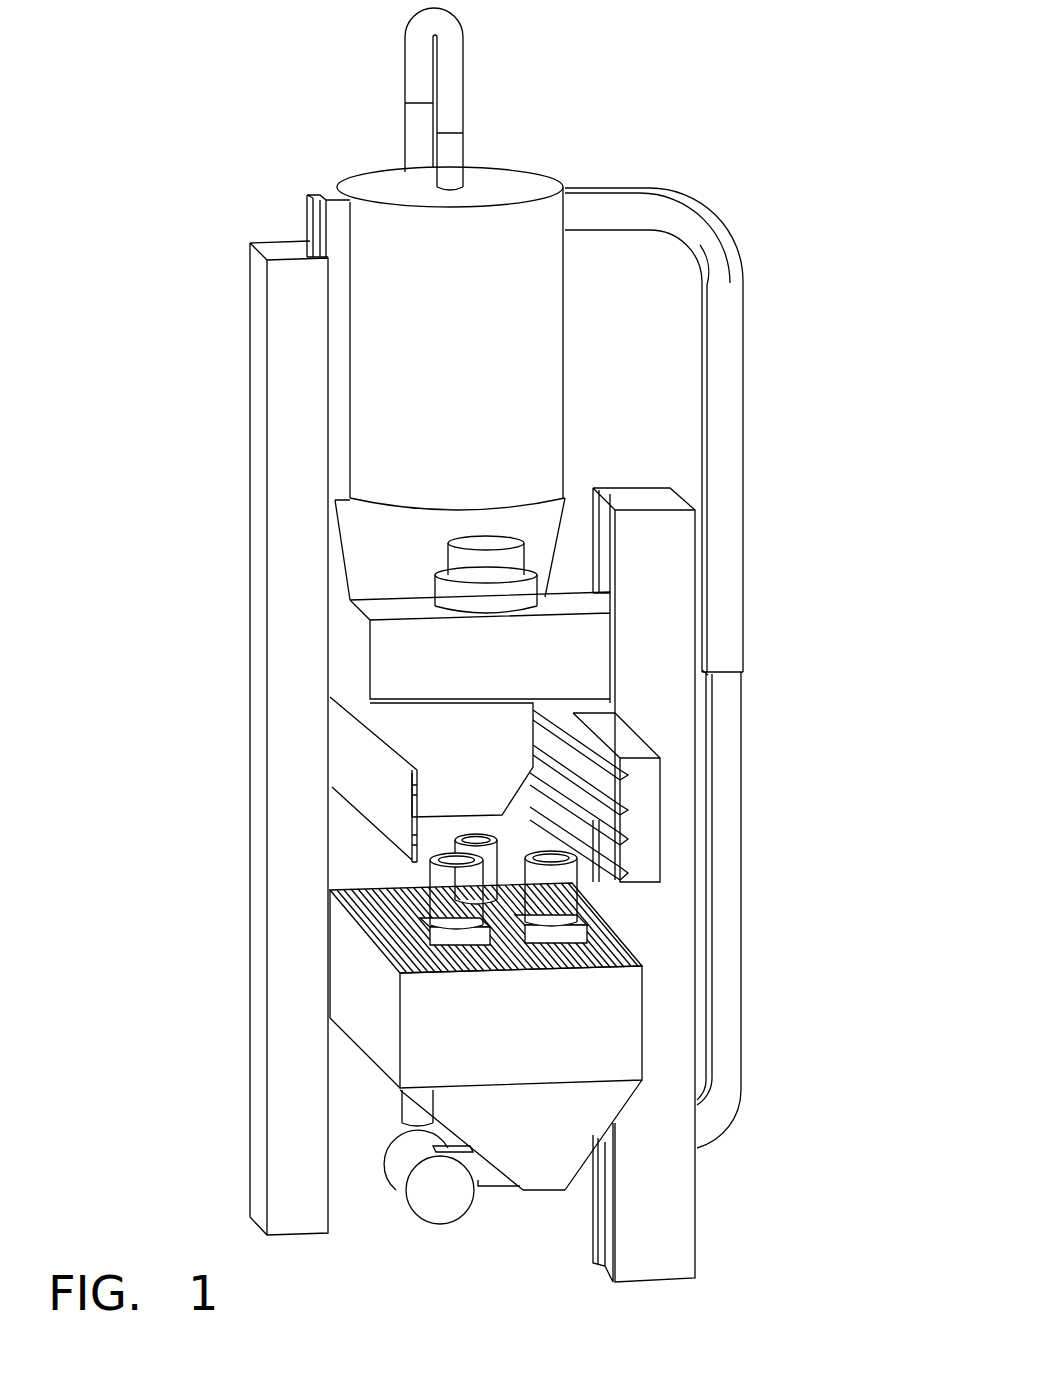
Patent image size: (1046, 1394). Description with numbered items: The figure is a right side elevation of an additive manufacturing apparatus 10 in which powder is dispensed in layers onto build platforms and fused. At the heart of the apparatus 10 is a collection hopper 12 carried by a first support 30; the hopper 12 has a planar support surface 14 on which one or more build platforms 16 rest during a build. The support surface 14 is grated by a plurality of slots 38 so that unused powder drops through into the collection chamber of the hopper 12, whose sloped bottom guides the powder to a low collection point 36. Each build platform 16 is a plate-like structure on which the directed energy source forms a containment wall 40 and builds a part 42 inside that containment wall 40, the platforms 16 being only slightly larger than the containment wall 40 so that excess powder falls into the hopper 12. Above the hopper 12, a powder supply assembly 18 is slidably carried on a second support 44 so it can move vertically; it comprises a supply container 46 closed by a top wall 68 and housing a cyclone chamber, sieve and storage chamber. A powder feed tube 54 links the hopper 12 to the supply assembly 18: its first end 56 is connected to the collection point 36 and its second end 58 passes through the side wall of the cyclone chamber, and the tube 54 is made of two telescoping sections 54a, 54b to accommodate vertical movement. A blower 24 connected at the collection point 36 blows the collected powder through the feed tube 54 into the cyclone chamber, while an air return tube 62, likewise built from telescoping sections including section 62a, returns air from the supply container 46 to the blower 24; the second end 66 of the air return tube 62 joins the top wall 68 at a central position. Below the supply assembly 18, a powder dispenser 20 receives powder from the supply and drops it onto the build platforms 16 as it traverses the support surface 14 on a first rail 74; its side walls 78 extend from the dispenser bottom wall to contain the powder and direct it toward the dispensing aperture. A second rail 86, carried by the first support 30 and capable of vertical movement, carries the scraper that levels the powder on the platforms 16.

The apparatus 10 is at (690, 115).
The collection hopper 12 is at (650, 998).
The support surface 14 is at (350, 888).
The build platforms 16 is at (568, 935).
The powder supply assembly 18 is at (568, 333).
The powder dispenser 20 is at (350, 692).
The blower 24 is at (428, 1192).
The first support 30 is at (667, 1192).
The collection point 36 is at (540, 1190).
The slots 38 is at (402, 960).
The containment wall 40 is at (562, 893).
The part 42 is at (548, 853).
The second support 44 is at (258, 345).
The supply container 46 is at (502, 404).
The powder feed tube 54 is at (748, 492).
The telescoping section 54a is at (730, 532).
The telescoping section 54b is at (720, 723).
The first end 56 is at (585, 1170).
The second end 58 is at (570, 215).
The air return tube 62 is at (475, 103).
The telescoping section 62a is at (410, 126).
The second end 66 is at (452, 148).
The top wall 68 is at (512, 183).
The first rail 74 is at (353, 763).
The side walls 78 is at (393, 717).
The second rail 86 is at (615, 735).